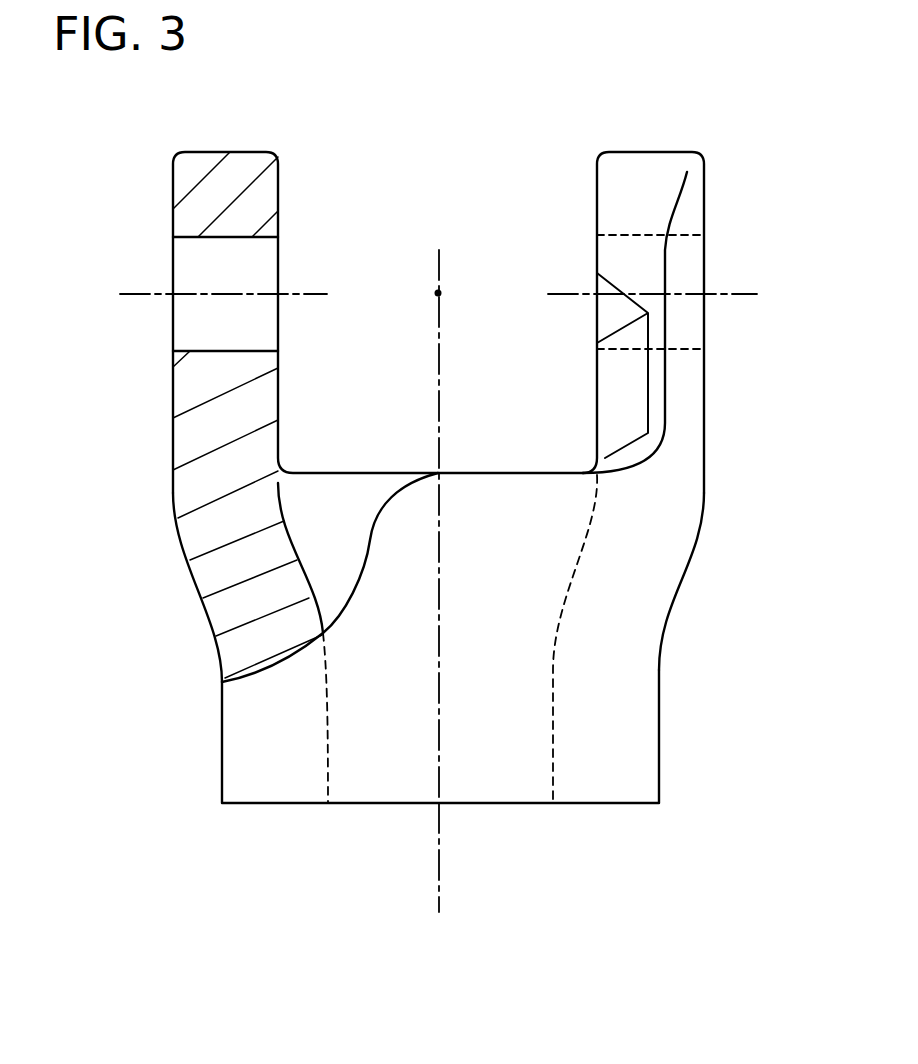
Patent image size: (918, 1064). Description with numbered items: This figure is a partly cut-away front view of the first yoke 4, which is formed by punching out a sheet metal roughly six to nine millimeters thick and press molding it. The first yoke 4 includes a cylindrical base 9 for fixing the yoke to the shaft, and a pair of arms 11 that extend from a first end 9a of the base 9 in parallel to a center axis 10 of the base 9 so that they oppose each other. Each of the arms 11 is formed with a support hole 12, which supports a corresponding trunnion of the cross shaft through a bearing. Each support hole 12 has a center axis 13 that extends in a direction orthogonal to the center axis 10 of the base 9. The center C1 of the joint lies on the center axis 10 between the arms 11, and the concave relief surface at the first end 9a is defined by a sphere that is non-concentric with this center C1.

The first yoke 4 is at (746, 132).
The cylindrical base 9 is at (660, 727).
The first end of the base 9a is at (672, 535).
The center axis of the base 10 is at (440, 873).
The arm 11 is at (212, 158).
The support hole 12 is at (213, 238).
The center axis of the support hole 13 is at (133, 297).
The center of the joint C1 is at (438, 293).